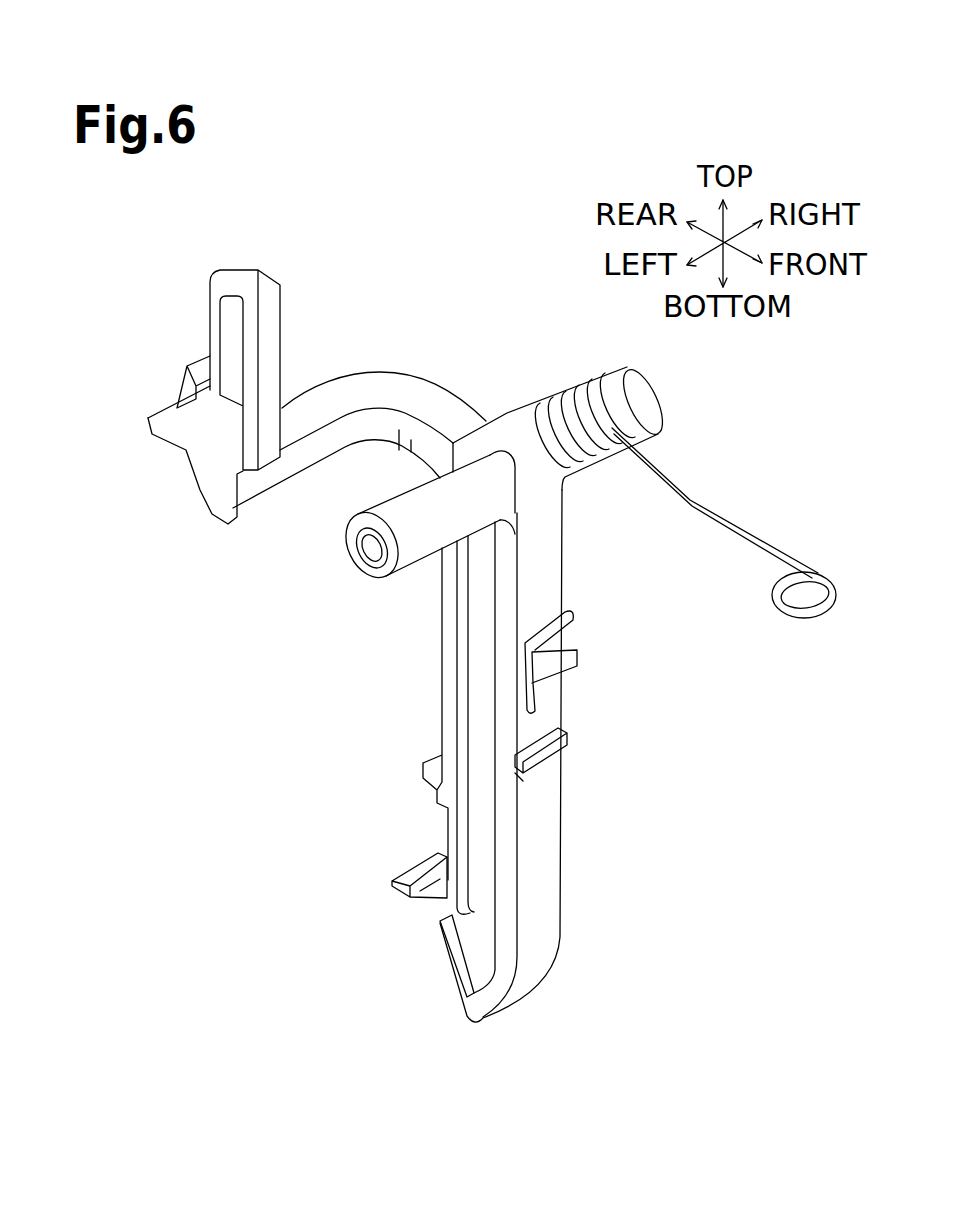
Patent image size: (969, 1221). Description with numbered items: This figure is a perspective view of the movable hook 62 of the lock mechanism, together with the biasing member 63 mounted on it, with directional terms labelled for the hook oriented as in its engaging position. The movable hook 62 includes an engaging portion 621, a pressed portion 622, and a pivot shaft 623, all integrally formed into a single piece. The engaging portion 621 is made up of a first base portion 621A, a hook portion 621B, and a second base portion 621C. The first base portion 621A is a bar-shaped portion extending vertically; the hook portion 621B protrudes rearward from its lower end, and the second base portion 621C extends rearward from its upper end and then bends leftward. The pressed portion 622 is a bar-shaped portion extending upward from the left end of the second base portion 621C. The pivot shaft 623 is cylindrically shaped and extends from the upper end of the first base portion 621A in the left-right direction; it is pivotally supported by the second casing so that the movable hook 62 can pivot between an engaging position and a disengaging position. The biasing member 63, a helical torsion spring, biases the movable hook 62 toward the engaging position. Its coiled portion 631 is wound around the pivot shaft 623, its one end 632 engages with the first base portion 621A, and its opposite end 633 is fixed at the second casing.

The movable hook 62 is at (138, 261).
The engaging portion 621 is at (575, 851).
The first base portion 621A is at (540, 817).
The hook portion 621B is at (392, 890).
The second base portion 621C is at (382, 383).
The pressed portion 622 is at (273, 308).
The pivot shaft 623 is at (355, 557).
The biasing member 63 is at (725, 504).
The coiled portion 631 is at (550, 387).
The one end 632 is at (537, 703).
The opposite end 633 is at (825, 607).